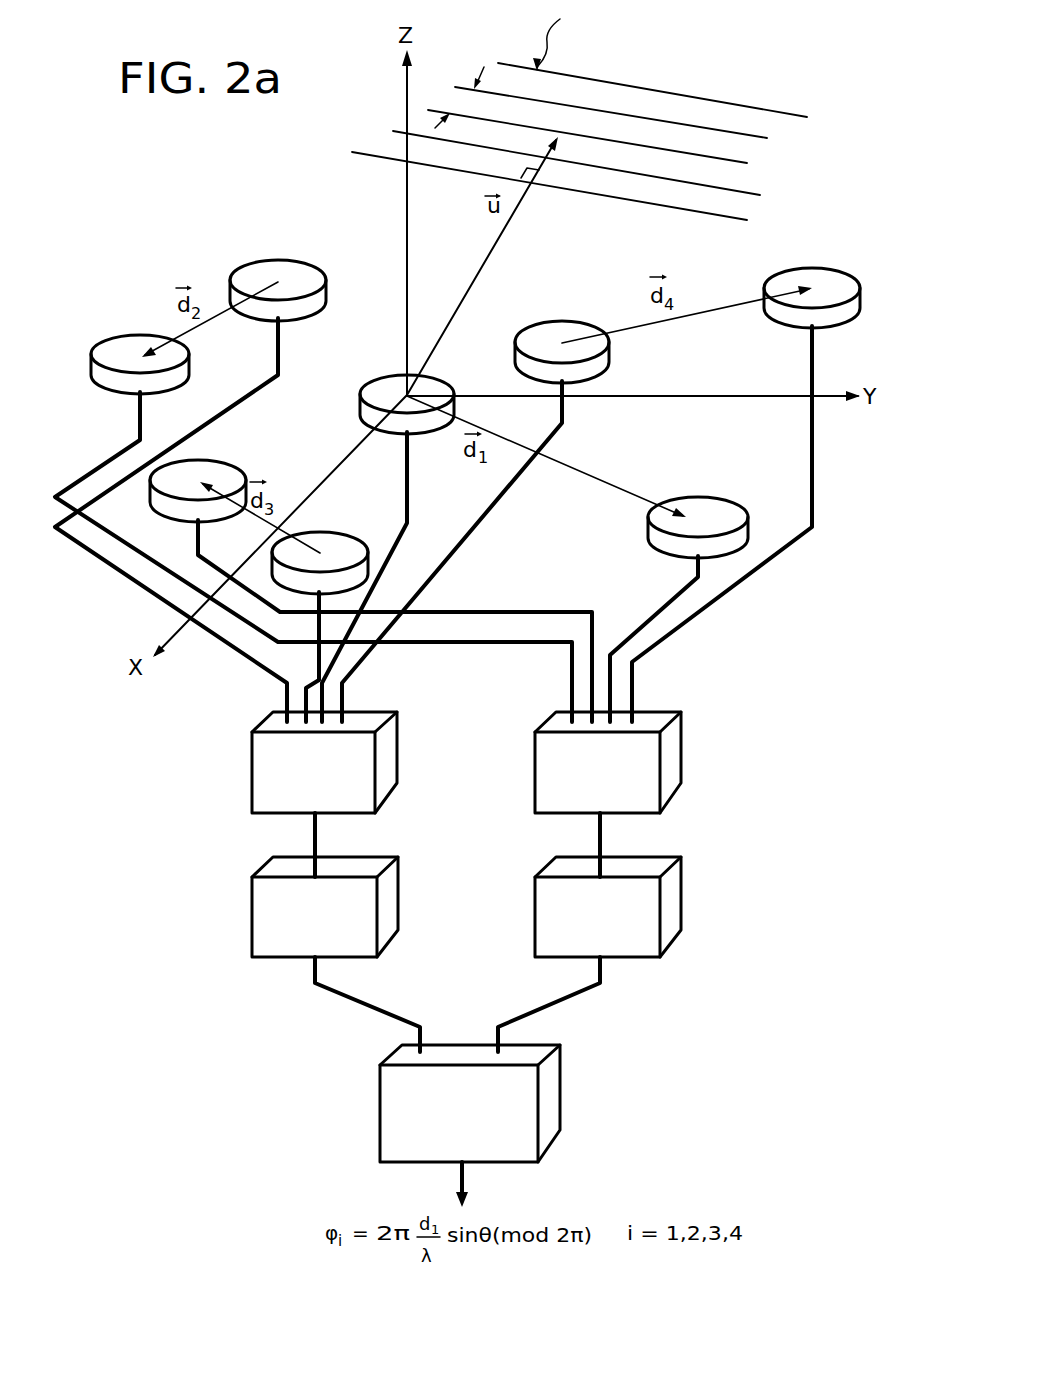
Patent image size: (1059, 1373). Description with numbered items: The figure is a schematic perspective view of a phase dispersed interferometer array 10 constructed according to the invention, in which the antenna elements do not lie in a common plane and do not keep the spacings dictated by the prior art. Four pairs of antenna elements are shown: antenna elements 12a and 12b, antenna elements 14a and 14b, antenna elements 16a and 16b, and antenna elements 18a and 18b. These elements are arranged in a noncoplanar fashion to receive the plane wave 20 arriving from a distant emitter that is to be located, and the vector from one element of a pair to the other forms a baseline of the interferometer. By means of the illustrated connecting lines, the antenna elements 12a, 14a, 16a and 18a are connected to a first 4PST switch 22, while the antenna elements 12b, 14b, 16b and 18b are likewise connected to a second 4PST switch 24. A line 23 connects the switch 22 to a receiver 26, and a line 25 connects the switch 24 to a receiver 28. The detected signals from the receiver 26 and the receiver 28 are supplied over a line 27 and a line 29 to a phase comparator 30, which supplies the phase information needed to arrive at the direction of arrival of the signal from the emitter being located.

The phase dispersed interferometer array 10 is at (453, 959).
The antenna element 12a is at (308, 278).
The antenna element 12b is at (125, 342).
The antenna element 14a is at (558, 330).
The antenna element 14b is at (843, 283).
The antenna element 16a is at (368, 395).
The antenna element 16b is at (730, 517).
The antenna element 18a is at (352, 548).
The antenna element 18b is at (371, 573).
The plane wave 20 is at (658, 112).
The 4PST switch 22 is at (252, 770).
The line 23 is at (313, 833).
The 4PST switch 24 is at (681, 758).
The line 25 is at (603, 833).
The receiver 26 is at (252, 917).
The line 27 is at (357, 1005).
The receiver 28 is at (682, 898).
The line 29 is at (563, 1003).
The phase comparator 30 is at (560, 1093).